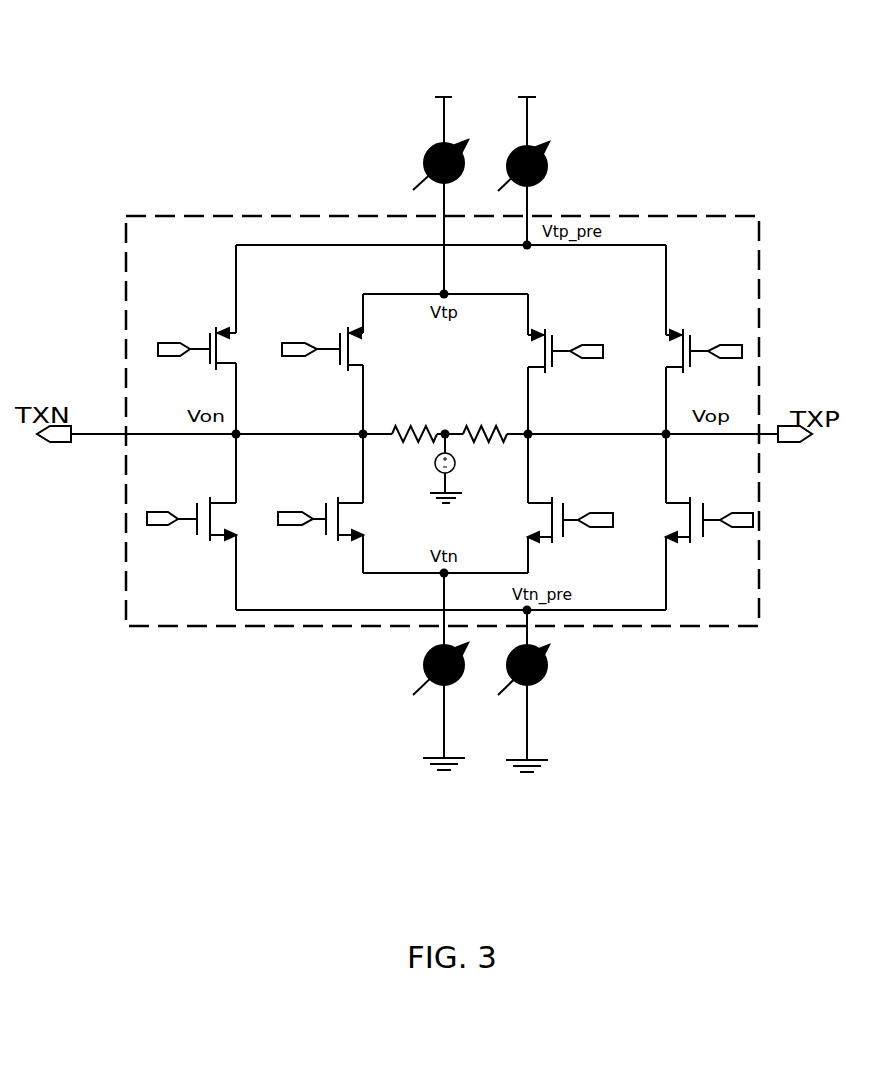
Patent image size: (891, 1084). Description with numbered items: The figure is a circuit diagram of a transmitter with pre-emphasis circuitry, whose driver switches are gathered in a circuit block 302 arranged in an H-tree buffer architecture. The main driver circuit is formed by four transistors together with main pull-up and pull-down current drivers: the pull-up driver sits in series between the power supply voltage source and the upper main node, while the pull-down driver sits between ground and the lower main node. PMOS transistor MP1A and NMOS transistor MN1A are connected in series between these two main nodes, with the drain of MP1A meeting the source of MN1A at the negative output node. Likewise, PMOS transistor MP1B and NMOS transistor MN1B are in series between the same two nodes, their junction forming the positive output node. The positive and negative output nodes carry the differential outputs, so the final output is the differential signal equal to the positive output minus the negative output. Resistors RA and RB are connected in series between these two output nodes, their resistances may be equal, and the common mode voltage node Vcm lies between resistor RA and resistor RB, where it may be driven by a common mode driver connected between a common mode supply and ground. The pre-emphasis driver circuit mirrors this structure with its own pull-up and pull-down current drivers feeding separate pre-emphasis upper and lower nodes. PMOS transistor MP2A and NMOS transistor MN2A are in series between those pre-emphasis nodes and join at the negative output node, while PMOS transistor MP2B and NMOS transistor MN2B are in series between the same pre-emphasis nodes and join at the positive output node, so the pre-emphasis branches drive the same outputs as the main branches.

The circuit block 302 is at (762, 298).
The PMOS transistor MP1A is at (353, 349).
The PMOS transistor MP1B is at (535, 351).
The PMOS transistor MP2A is at (219, 348).
The PMOS transistor MP2B is at (680, 351).
The NMOS transistor MN1A is at (345, 519).
The NMOS transistor MN1B is at (545, 520).
The NMOS transistor MN2A is at (209, 519).
The NMOS transistor MN2B is at (692, 520).
The resistor RA is at (412, 423).
The resistor RB is at (488, 423).
The common mode voltage node Vcm is at (449, 457).